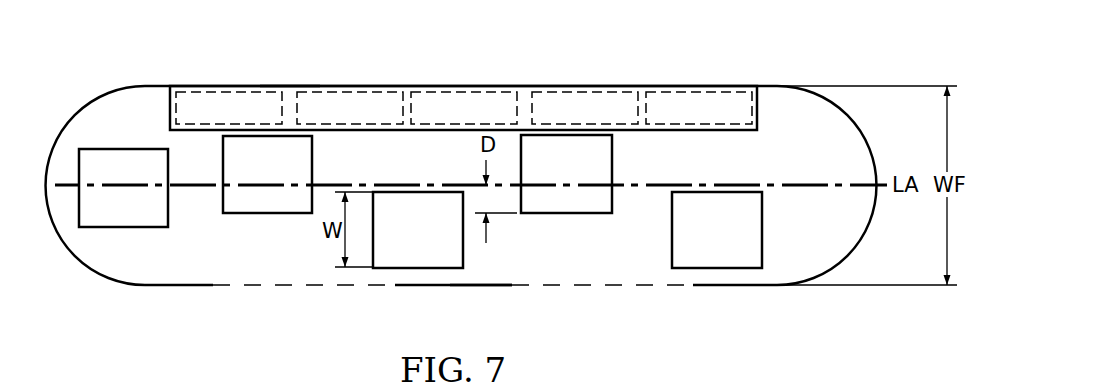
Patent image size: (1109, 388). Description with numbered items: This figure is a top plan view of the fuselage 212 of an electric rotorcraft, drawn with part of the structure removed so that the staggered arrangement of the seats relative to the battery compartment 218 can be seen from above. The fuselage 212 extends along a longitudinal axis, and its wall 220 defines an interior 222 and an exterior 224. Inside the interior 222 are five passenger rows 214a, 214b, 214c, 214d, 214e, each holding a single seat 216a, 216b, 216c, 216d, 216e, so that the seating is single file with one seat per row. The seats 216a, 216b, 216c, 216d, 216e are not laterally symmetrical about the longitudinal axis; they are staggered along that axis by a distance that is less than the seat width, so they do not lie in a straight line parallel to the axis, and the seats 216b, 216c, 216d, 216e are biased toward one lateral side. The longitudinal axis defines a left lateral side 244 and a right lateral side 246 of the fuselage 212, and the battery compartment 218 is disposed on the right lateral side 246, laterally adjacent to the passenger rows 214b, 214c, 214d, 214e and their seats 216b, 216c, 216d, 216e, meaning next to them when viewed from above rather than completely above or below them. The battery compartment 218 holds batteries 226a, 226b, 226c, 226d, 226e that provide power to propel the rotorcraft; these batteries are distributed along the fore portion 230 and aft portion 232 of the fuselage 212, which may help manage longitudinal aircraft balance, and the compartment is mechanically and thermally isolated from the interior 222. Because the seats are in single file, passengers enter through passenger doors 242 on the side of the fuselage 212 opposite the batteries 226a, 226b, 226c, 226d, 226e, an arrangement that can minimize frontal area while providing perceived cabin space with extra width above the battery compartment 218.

The fuselage 212 is at (486, 187).
The passenger row 214a is at (93, 238).
The second passenger row 214b is at (298, 228).
The passenger row 214c is at (476, 260).
The passenger row 214d is at (619, 172).
The passenger row 214e is at (743, 174).
The seat 216a is at (117, 148).
The second seat 216b is at (268, 214).
The seat 216c is at (417, 191).
The seat 216d is at (568, 214).
The seat 216e is at (762, 230).
The battery compartment 218 is at (523, 93).
The wall 220 is at (732, 287).
The interior 222 is at (177, 266).
The exterior 224 is at (428, 287).
The battery 226a is at (222, 91).
The battery 226b is at (343, 91).
The battery 226c is at (457, 91).
The battery 226d is at (592, 91).
The battery 226e is at (707, 91).
The fore portion 230 is at (132, 284).
The aft portion 232 is at (863, 140).
The passenger doors 242 is at (233, 287).
The left lateral side 244 is at (465, 287).
The right lateral side 246 is at (287, 85).